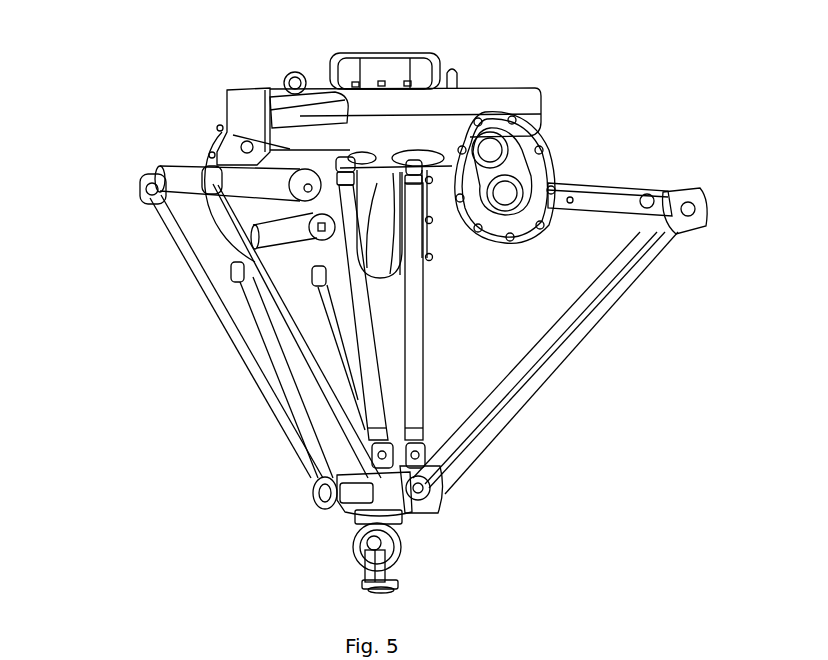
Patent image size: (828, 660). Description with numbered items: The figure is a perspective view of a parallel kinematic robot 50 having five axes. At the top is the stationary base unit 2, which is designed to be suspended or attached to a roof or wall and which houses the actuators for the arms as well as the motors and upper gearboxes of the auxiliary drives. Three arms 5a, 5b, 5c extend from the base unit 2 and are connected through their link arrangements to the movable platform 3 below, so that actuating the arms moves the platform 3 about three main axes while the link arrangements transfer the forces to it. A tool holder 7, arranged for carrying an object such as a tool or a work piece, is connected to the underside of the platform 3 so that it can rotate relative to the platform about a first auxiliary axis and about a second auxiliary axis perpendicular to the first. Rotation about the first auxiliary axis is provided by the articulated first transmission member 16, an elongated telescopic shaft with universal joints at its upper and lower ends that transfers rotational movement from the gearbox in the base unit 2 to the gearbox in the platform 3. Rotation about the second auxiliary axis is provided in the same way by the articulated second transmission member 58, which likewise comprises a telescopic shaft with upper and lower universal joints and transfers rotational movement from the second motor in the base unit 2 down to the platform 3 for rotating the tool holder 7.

The base unit 2 is at (468, 101).
The parallel kinematic robot 50 is at (372, 299).
The arm 5a is at (194, 265).
The arm 5b is at (621, 172).
The arm 5c is at (259, 315).
The second transmission member 58 is at (368, 352).
The first transmission member 16 is at (420, 390).
The platform 3 is at (352, 507).
The tool holder 7 is at (368, 585).